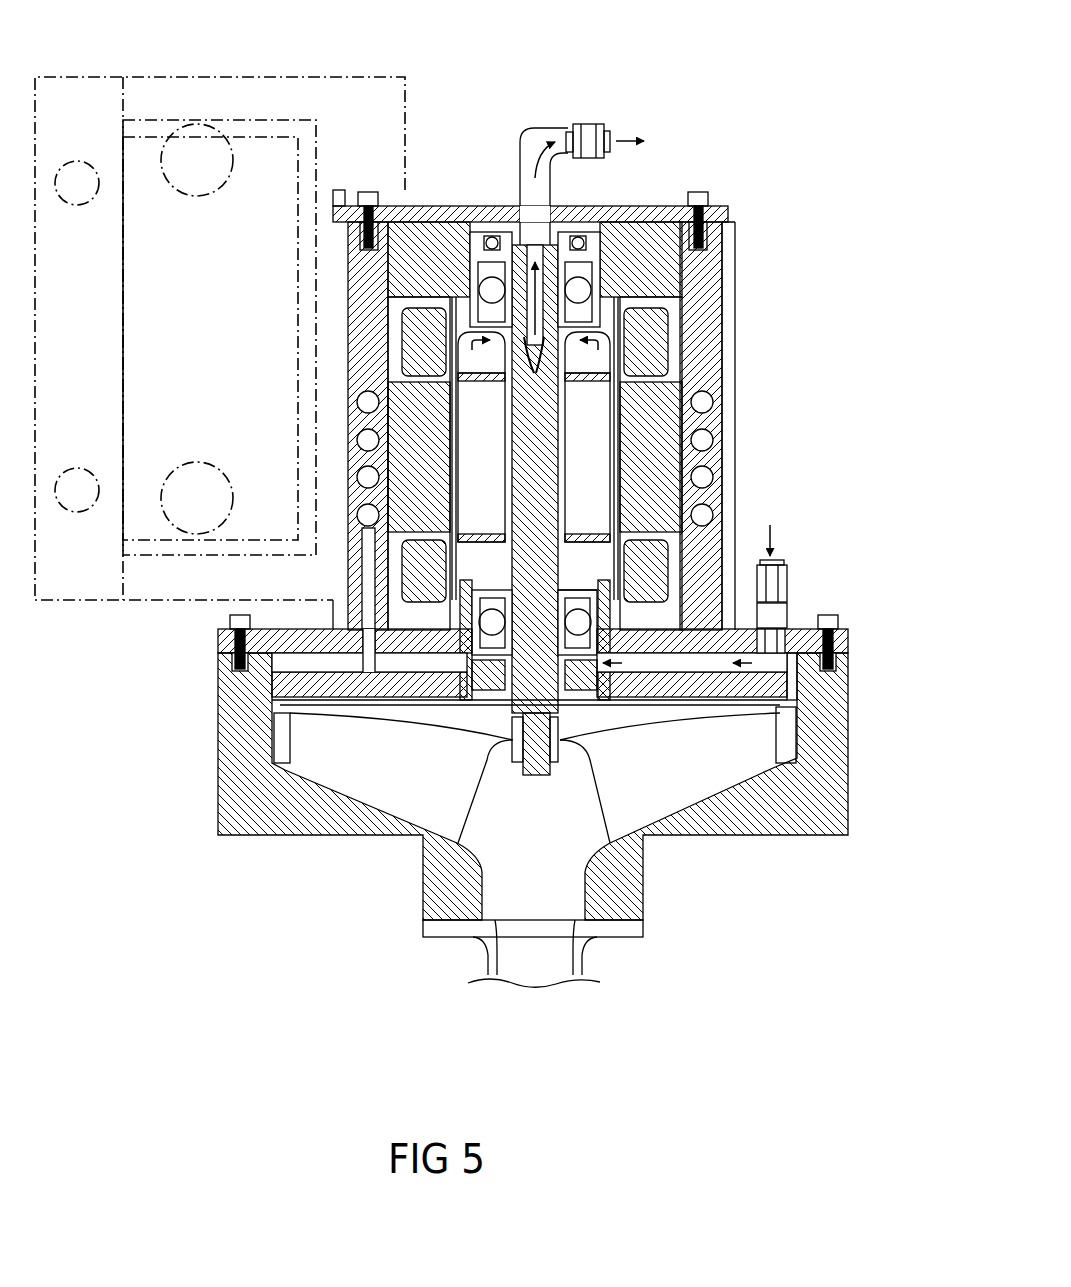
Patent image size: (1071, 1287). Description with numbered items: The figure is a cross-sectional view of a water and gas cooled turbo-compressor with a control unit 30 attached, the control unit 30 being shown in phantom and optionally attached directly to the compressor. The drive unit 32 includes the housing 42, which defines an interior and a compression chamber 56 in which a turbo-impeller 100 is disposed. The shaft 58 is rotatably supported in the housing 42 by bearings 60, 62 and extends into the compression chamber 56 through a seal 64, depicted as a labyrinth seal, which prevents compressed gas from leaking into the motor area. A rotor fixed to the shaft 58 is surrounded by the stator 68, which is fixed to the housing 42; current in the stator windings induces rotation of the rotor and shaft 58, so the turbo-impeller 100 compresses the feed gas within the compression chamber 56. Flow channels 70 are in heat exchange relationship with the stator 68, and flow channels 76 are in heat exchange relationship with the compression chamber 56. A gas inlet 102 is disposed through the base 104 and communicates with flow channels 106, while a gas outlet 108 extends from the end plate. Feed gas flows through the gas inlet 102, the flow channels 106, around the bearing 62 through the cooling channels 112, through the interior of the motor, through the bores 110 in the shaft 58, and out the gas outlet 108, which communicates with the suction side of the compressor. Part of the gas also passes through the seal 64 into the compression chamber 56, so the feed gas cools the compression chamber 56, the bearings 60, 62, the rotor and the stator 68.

The control unit 30 is at (247, 88).
The drive unit 32 is at (750, 327).
The housing 42 is at (733, 238).
The compression chamber 56 is at (793, 767).
The shaft 58 is at (557, 552).
The bearing 60 is at (597, 270).
The bearing 62 is at (497, 590).
The seal 64 is at (570, 687).
The stator 68 is at (665, 302).
The flow channels 70 is at (713, 405).
The flow channels 76 is at (298, 667).
The turbo-impeller 100 is at (650, 810).
The gas inlet 102 is at (783, 570).
The base 104 is at (790, 640).
The flow channels 106 is at (720, 667).
The gas outlet 108 is at (541, 128).
The bores 110 is at (538, 374).
The cooling channels 112 is at (597, 597).